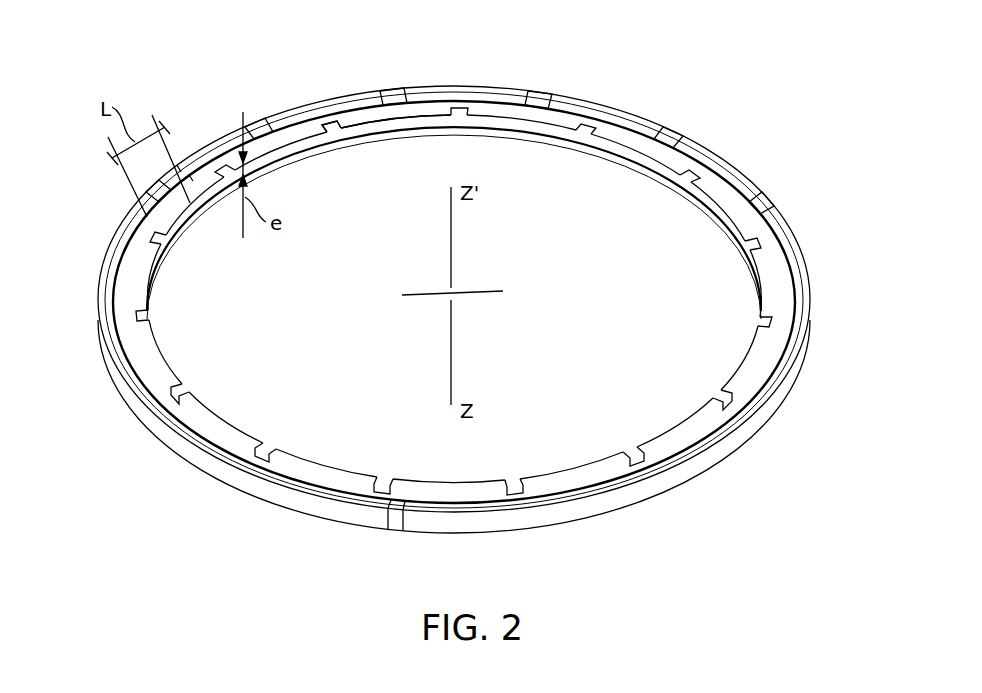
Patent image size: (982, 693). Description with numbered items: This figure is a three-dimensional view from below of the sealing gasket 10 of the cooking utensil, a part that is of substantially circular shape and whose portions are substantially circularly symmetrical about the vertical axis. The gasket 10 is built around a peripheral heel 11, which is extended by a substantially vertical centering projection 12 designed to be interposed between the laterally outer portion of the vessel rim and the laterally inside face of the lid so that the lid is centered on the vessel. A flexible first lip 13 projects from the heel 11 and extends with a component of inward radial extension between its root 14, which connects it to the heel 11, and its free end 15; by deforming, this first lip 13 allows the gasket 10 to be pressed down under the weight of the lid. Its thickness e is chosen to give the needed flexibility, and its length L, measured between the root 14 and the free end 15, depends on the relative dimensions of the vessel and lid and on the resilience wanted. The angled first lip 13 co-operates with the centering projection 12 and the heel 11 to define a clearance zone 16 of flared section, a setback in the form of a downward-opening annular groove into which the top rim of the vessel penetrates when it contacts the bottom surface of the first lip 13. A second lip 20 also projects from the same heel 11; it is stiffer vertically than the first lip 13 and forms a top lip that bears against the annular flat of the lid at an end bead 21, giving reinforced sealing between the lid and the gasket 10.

The sealing gasket 10 is at (733, 130).
The heel 11 is at (641, 489).
The centering projection 12 is at (483, 96).
The first lip 13 is at (132, 283).
The root 14 is at (123, 380).
The free end 15 is at (170, 366).
The clearance zone 16 is at (301, 120).
The second lip 20 is at (357, 140).
The end bead 21 is at (398, 140).